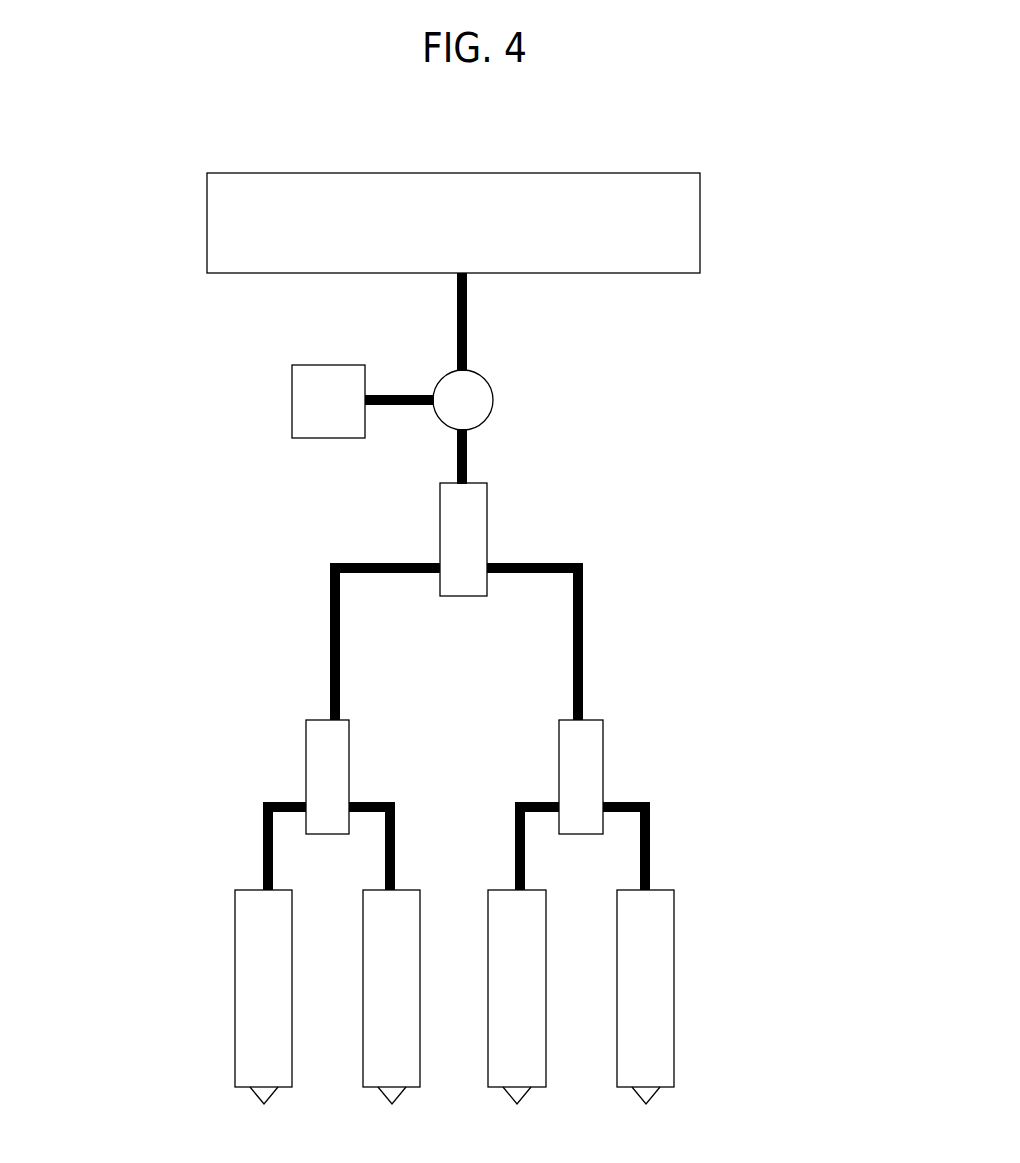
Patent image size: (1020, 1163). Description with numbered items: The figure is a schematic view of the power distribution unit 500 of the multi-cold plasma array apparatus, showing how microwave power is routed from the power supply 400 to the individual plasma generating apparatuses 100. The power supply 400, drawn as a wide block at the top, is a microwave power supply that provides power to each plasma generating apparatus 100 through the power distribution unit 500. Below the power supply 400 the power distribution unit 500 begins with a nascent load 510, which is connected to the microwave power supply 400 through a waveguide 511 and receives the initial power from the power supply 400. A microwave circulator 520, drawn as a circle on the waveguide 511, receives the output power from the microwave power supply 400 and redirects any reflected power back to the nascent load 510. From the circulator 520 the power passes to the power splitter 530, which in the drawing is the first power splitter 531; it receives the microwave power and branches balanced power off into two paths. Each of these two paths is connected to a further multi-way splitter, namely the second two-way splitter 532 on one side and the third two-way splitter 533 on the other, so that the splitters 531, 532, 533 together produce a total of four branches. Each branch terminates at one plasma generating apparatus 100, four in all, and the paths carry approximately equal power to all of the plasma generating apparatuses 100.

The power supply 400 is at (205, 225).
The power distribution unit 500 is at (796, 337).
The nascent load 510 is at (467, 312).
The waveguide 511 is at (292, 397).
The microwave circulator 520 is at (493, 398).
The power splitter 530 is at (453, 686).
The first power splitter 531 is at (462, 596).
The second two-way splitter 532 is at (305, 760).
The third two-way splitter 533 is at (603, 765).
The plasma generating apparatus 100 is at (233, 953).